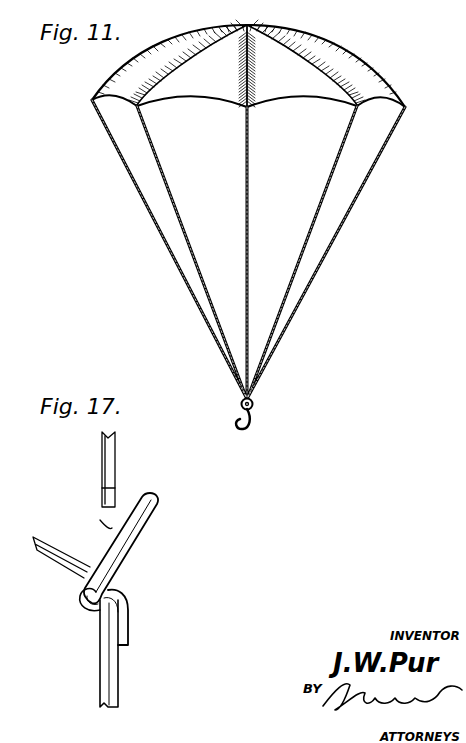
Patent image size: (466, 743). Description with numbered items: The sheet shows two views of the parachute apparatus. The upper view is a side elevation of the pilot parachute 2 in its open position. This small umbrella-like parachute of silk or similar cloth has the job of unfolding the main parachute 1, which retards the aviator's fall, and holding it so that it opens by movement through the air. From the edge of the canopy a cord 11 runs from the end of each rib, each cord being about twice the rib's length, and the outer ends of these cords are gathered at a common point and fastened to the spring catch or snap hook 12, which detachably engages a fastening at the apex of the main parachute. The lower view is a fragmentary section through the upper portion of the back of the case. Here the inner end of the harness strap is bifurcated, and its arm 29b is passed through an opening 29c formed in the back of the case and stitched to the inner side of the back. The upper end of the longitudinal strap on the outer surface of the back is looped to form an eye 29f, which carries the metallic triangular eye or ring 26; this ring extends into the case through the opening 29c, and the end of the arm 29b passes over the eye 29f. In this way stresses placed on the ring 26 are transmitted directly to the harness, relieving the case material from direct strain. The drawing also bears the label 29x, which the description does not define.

In FIG. 11, the pilot parachute 2 is at (368, 67).
In FIG. 11, the cord 11 is at (360, 192).
In FIG. 11, the snap hook 12 is at (252, 412).
In FIG. 17, the parachute 1 is at (108, 452).
In FIG. 17, the opening 29c is at (103, 523).
In FIG. 17, the arm 29b is at (64, 556).
In FIG. 17, the metallic triangular eye or ring 26 is at (130, 540).
In FIG. 17, the eye 29f is at (93, 610).
In FIG. 17, the strap end 29x is at (100, 697).